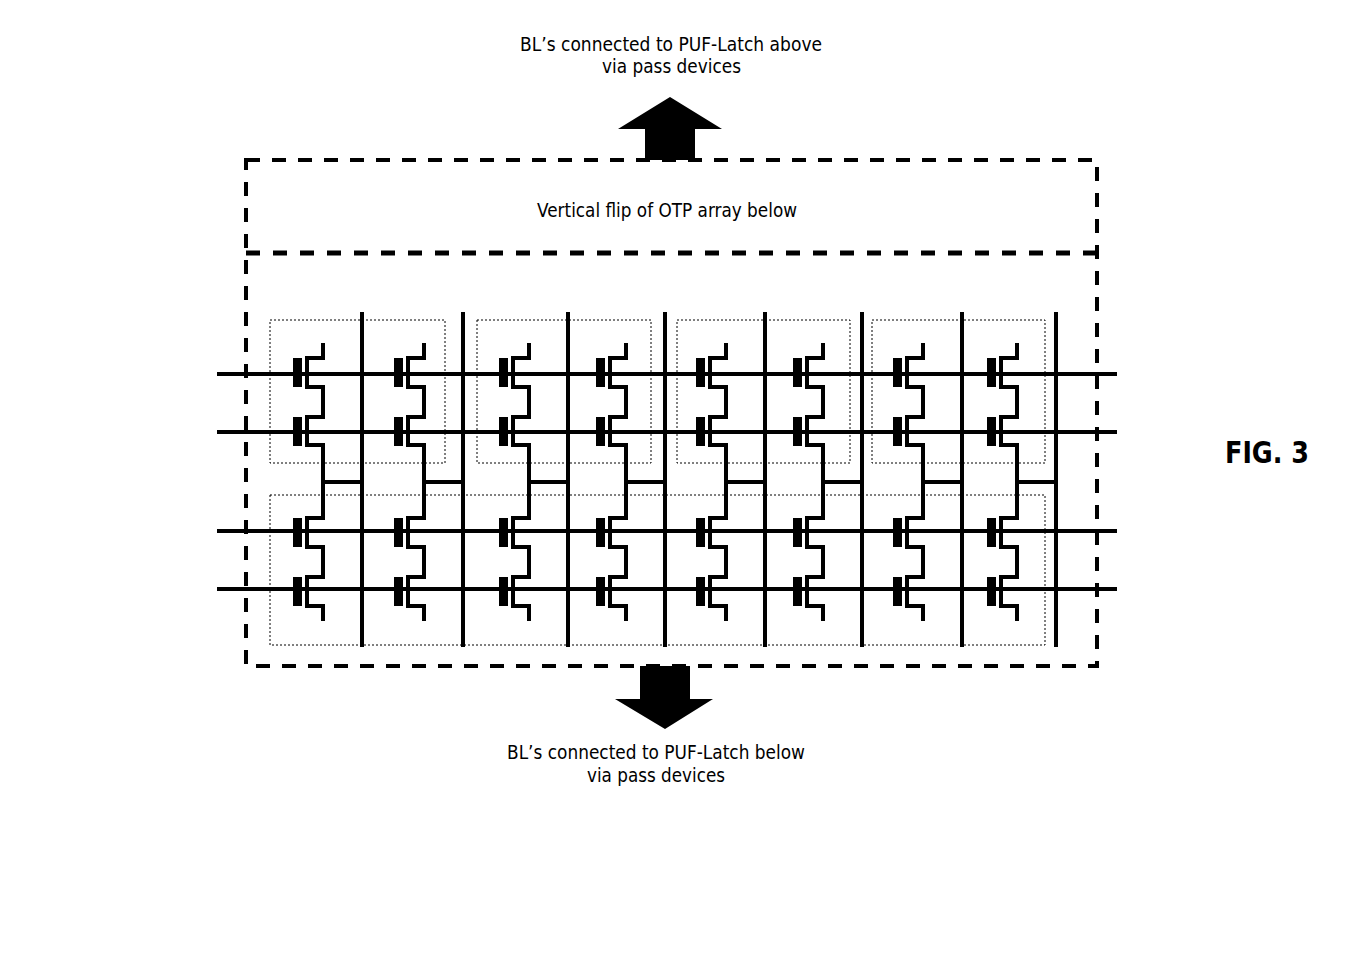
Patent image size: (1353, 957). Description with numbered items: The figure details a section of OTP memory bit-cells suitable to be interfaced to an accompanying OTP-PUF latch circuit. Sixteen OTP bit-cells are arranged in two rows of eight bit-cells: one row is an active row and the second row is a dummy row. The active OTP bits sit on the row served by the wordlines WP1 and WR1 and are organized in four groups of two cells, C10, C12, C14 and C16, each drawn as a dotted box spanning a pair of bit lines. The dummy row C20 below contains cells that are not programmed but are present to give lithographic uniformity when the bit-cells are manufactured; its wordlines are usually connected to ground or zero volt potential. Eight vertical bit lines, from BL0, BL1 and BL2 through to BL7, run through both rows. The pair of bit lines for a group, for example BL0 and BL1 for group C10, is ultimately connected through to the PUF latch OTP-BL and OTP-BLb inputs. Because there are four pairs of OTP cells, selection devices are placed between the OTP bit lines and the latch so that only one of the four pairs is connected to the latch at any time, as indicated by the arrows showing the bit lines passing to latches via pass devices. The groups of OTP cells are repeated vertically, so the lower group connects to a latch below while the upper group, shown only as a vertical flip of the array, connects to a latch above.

The group of two OTP bit-cells C10 is at (366, 401).
The group of two OTP bit-cells C12 is at (571, 401).
The group of two OTP bit-cells C14 is at (769, 401).
The group of two OTP bit-cells C16 is at (964, 401).
The dummy row of OTP bit-cells C20 is at (657, 563).
The bit line BL0 is at (360, 467).
The bit line BL1 is at (463, 467).
The bit line BL2 is at (568, 467).
The bit line BL7 is at (1056, 467).
The read wordline WR1 is at (640, 375).
The program wordline WP1 is at (640, 434).